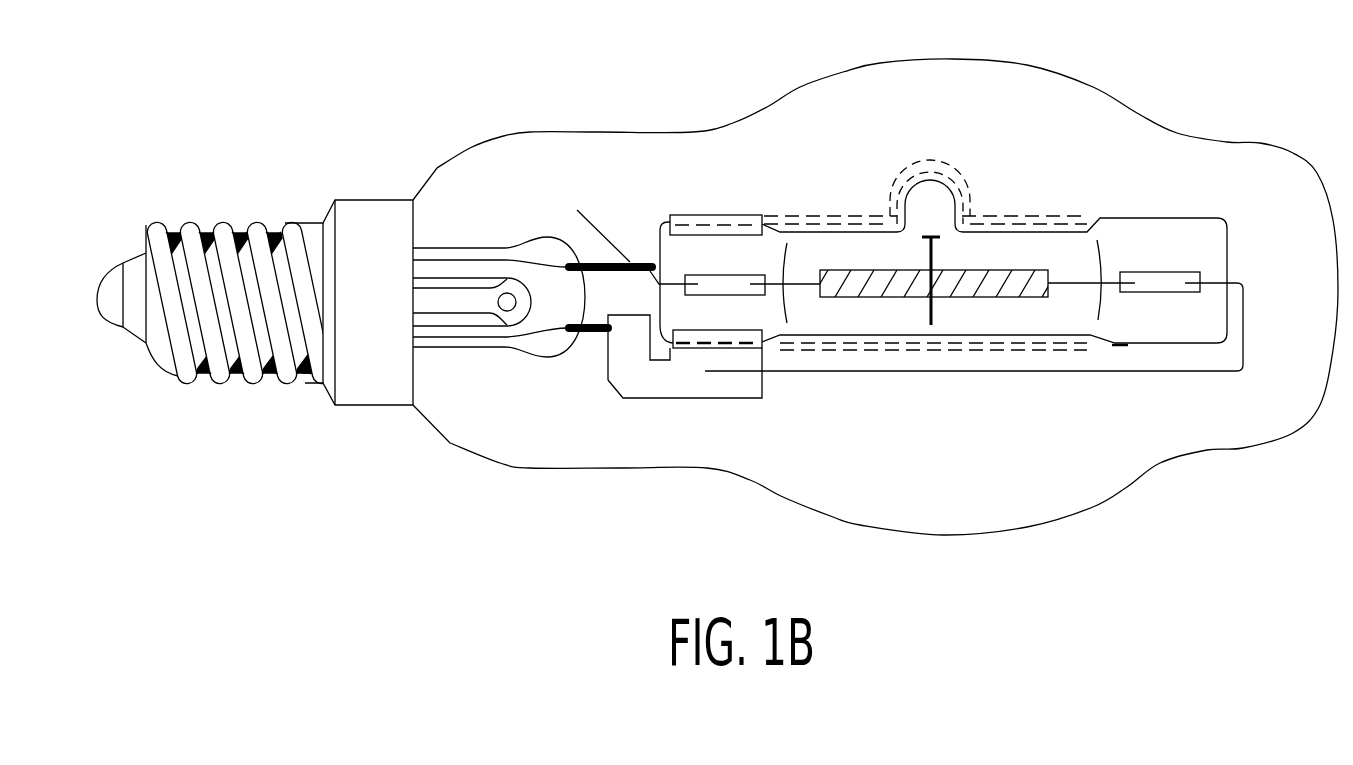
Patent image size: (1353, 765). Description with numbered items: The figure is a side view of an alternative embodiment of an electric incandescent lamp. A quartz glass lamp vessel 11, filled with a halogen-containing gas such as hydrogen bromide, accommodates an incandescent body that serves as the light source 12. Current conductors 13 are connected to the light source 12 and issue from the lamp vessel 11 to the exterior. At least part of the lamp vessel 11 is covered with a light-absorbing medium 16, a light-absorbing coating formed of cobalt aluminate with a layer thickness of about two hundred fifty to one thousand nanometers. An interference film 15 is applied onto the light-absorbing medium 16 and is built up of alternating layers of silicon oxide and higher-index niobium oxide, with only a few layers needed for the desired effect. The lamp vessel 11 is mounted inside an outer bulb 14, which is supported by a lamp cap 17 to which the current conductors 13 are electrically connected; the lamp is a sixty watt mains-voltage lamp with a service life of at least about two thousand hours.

The lamp vessel 11 is at (1138, 217).
The light source 12 is at (1017, 297).
The current conductors 13 is at (810, 284).
The outer bulb 14 is at (612, 131).
The interference film 15 is at (960, 350).
The light-absorbing medium 16 is at (892, 340).
The lamp cap 17 is at (303, 237).